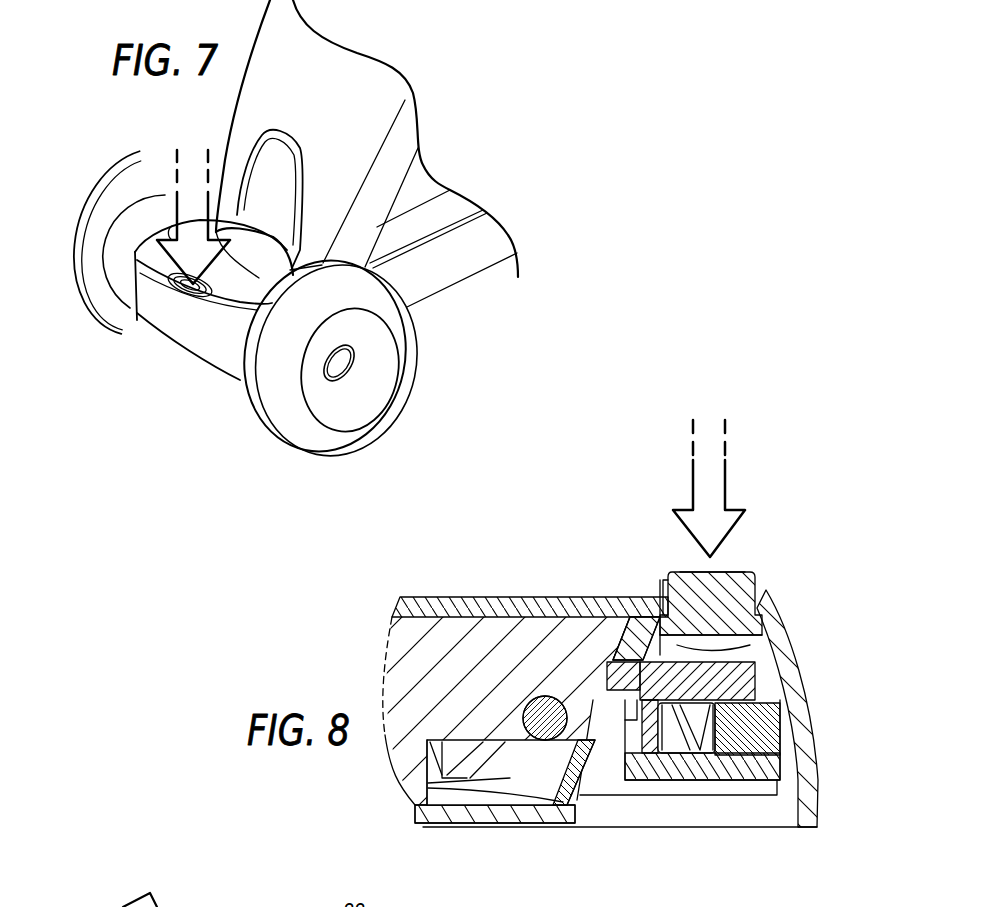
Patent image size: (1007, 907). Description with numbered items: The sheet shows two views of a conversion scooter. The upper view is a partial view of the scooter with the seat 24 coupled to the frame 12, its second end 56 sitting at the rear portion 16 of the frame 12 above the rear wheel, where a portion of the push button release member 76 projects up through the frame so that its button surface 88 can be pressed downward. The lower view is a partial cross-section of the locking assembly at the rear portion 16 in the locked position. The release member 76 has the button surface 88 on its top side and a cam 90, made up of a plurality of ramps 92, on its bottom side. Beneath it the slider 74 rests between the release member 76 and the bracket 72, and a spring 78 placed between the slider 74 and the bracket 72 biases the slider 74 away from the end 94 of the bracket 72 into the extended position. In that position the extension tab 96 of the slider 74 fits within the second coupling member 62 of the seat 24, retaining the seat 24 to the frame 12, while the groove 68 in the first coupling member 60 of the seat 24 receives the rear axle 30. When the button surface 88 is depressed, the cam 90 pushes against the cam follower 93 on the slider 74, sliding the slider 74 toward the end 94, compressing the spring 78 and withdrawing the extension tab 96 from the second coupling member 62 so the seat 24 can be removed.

In FIG. 7, the frame 12 is at (427, 278).
In FIG. 7, the rear portion 16 is at (187, 343).
In FIG. 7, the seat 24 is at (357, 80).
In FIG. 8, the seat 24 is at (453, 633).
In FIG. 8, the rear axle 30 is at (545, 717).
In FIG. 7, the second end 56 is at (259, 278).
In FIG. 8, the second end 56 is at (508, 627).
In FIG. 8, the first coupling member 60 is at (555, 620).
In FIG. 8, the second coupling member 62 is at (667, 647).
In FIG. 8, the groove 68 is at (523, 737).
In FIG. 8, the bracket 72 is at (758, 755).
In FIG. 8, the slider 74 is at (742, 683).
In FIG. 8, the release member 76 is at (735, 600).
In FIG. 8, the spring 78 is at (690, 747).
In FIG. 7, the button surface 88 is at (190, 287).
In FIG. 8, the button surface 88 is at (735, 572).
In FIG. 8, the cam 90 is at (615, 677).
In FIG. 8, the ramps 92 is at (690, 650).
In FIG. 8, the cam follower 93 is at (667, 680).
In FIG. 8, the end 94 is at (782, 733).
In FIG. 8, the extension tab 96 is at (613, 677).